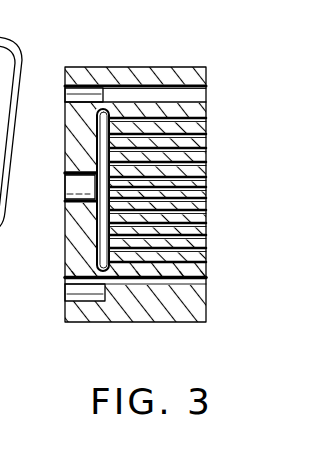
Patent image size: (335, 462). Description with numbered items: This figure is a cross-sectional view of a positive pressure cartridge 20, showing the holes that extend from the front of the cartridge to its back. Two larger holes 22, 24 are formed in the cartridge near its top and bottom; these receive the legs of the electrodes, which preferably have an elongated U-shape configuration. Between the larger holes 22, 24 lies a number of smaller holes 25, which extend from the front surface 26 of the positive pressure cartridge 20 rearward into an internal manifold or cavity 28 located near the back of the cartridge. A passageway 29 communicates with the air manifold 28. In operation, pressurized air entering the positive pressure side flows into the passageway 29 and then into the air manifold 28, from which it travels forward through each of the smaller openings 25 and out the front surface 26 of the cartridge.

The positive pressure cartridge 20 is at (132, 67).
The larger hole 22 is at (206, 89).
The larger hole 24 is at (205, 288).
The smaller holes 25 is at (208, 198).
The front surface 26 is at (206, 229).
The internal manifold 28 is at (103, 233).
The passageway 29 is at (93, 175).